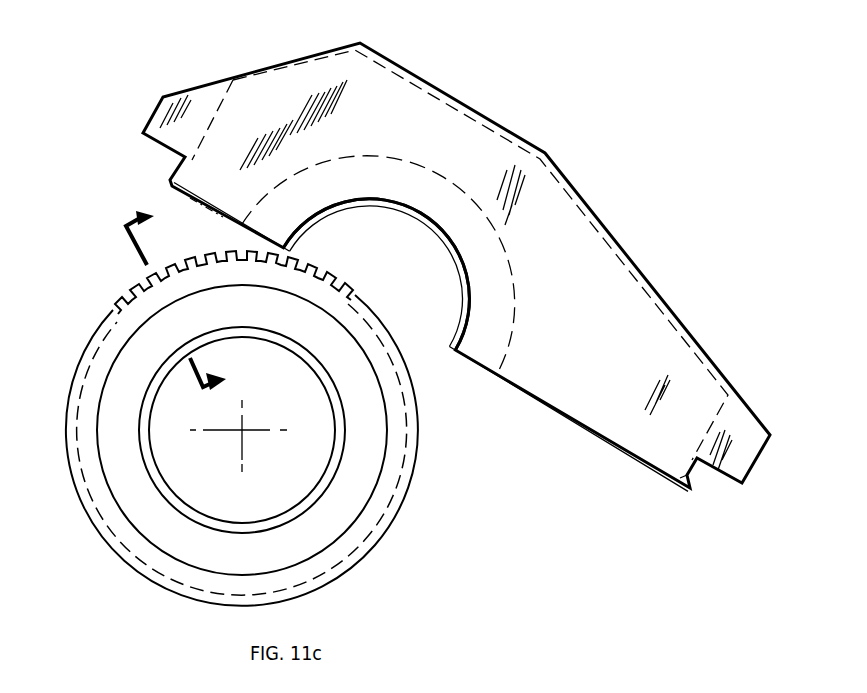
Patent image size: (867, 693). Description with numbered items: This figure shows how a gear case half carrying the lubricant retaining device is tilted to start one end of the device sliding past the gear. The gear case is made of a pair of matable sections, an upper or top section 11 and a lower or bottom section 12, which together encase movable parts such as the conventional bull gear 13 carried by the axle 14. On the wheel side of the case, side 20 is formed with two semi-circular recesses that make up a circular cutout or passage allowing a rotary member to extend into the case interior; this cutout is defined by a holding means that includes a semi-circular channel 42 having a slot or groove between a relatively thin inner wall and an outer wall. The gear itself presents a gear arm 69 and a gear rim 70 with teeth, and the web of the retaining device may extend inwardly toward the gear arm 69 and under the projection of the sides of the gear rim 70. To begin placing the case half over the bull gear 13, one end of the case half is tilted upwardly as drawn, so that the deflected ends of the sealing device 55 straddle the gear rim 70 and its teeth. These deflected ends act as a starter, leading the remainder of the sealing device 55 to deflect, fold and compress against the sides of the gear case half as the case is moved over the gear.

The upper or top section 11 is at (382, 88).
The lower or bottom section 12 is at (188, 297).
The bull gear 13 is at (216, 423).
The axle 14 is at (323, 393).
The side 20 is at (545, 350).
The channel 42 is at (470, 273).
The sealing device 55 is at (456, 178).
The gear arm 69 is at (362, 411).
The gear rim 70 is at (303, 273).